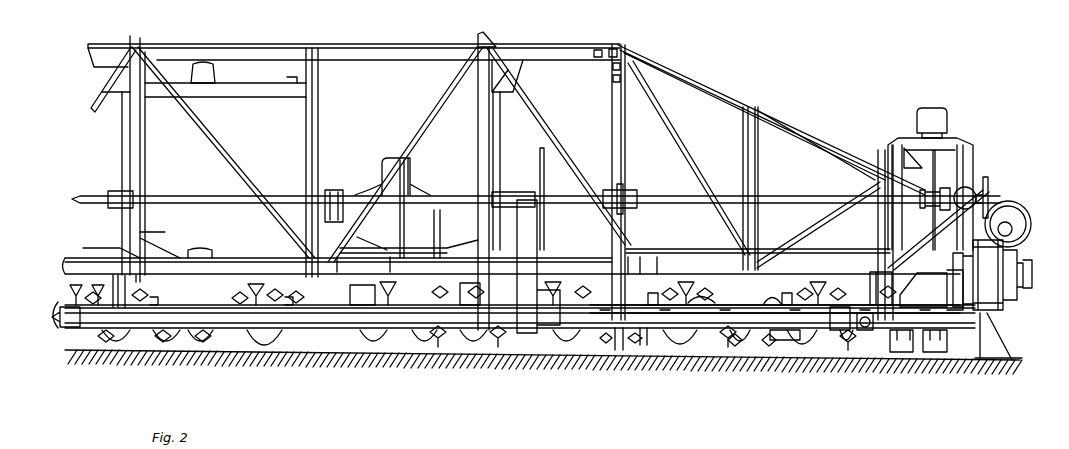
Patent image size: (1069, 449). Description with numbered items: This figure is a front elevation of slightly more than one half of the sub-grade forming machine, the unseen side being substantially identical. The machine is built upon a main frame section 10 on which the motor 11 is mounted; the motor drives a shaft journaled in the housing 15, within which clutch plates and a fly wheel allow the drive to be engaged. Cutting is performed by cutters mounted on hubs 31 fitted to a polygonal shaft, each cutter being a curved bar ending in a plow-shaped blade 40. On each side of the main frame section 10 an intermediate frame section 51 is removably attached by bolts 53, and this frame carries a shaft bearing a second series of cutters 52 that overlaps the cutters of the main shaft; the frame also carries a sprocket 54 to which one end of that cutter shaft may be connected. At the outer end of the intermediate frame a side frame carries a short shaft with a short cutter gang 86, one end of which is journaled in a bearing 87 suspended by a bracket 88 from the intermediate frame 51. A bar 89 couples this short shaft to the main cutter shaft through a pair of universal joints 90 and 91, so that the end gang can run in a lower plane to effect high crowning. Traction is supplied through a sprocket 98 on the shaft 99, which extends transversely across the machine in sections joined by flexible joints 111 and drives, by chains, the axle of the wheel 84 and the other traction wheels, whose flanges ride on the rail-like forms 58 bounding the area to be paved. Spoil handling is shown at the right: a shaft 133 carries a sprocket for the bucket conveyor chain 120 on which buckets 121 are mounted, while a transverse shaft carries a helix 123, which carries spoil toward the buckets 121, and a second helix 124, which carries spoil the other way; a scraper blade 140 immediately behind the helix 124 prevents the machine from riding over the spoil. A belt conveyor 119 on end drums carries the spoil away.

The main frame section 10 is at (391, 58).
The motor 11 is at (225, 112).
The housing 15 is at (391, 158).
The hubs 31 is at (425, 310).
The plow-shaped blade 40 is at (498, 338).
The intermediate frame section 51 is at (703, 92).
The second series of cutters 52 is at (617, 314).
The bolts 53 is at (617, 48).
The sprocket 54 is at (66, 308).
The forms 58 is at (1000, 336).
The wheel 84 is at (992, 273).
The cutter gang 86 is at (915, 313).
The bearing 87 is at (850, 345).
The bracket 88 is at (867, 283).
The bar 89 is at (727, 316).
The universal joint 90 is at (844, 325).
The universal joint 91 is at (544, 320).
The sprocket 98 is at (540, 168).
The shaft 99 is at (667, 198).
The flexible joints 111 is at (607, 178).
The belt conveyor 119 is at (1000, 200).
The bucket conveyor chain 120 is at (950, 180).
The buckets 121 is at (938, 121).
The helix 123 is at (560, 340).
The second helix 124 is at (258, 338).
The shaft 133 is at (922, 150).
The scraper blade 140 is at (785, 342).